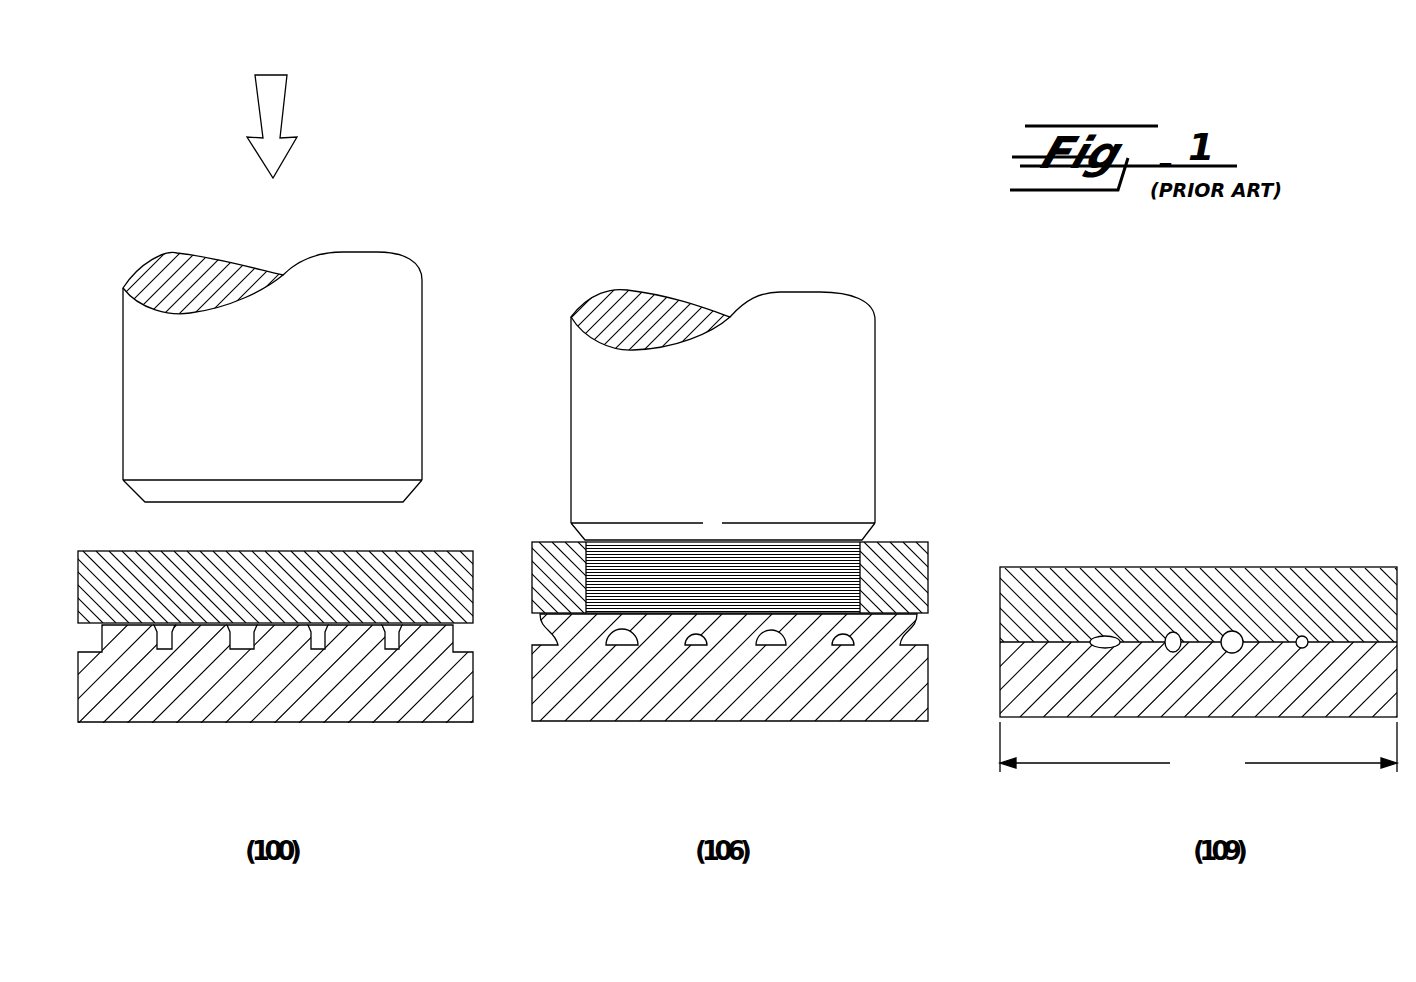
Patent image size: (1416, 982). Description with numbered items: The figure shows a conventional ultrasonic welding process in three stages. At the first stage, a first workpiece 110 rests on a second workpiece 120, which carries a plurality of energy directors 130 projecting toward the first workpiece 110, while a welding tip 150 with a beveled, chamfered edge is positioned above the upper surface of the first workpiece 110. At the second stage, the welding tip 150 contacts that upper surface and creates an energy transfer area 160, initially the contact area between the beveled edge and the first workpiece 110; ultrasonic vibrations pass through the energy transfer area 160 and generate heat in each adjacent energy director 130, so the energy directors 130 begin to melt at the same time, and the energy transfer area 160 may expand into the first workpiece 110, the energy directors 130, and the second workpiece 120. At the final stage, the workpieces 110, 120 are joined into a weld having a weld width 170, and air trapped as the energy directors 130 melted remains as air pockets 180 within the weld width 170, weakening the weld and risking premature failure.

The first workpiece 110 is at (463, 580).
The second workpiece 120 is at (128, 708).
The energy directors 130 is at (455, 630).
The welding tip 150 is at (403, 300).
The energy transfer area 160 is at (793, 541).
The weld width 170 is at (1198, 750).
The air pockets 180 is at (843, 640).